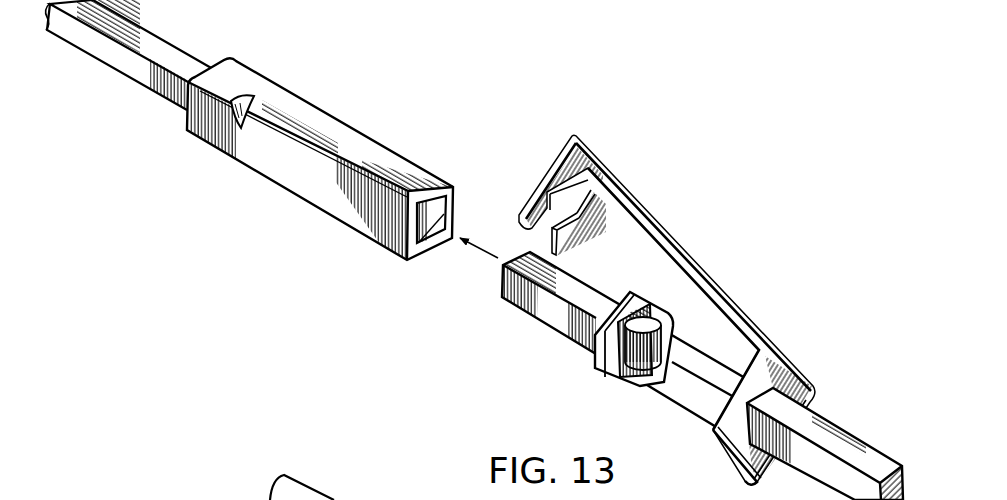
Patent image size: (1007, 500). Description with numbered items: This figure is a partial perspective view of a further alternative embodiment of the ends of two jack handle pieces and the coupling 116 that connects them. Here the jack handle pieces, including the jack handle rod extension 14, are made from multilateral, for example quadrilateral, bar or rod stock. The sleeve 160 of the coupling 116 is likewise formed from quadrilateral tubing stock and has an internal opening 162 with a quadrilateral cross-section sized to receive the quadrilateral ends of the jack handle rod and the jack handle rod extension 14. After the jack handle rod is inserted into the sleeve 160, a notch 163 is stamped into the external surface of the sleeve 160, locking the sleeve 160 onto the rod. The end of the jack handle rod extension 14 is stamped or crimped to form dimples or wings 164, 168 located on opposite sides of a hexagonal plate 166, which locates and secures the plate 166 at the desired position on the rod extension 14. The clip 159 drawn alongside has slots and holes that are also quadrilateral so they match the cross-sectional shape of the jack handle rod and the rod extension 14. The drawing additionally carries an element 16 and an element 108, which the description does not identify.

The jack handle rod extension 14 is at (870, 440).
The frame member assembly 16 is at (391, 272).
The hinge member 108 is at (273, 487).
The coupling 116 is at (373, 139).
The clip 159 is at (677, 236).
The sleeve 160 is at (287, 173).
The internal opening 162 is at (441, 214).
The notch 163 is at (243, 95).
The dimple or wing 164 is at (592, 314).
The hexagonal plate 166 is at (652, 300).
The dimple or wing 168 is at (648, 380).